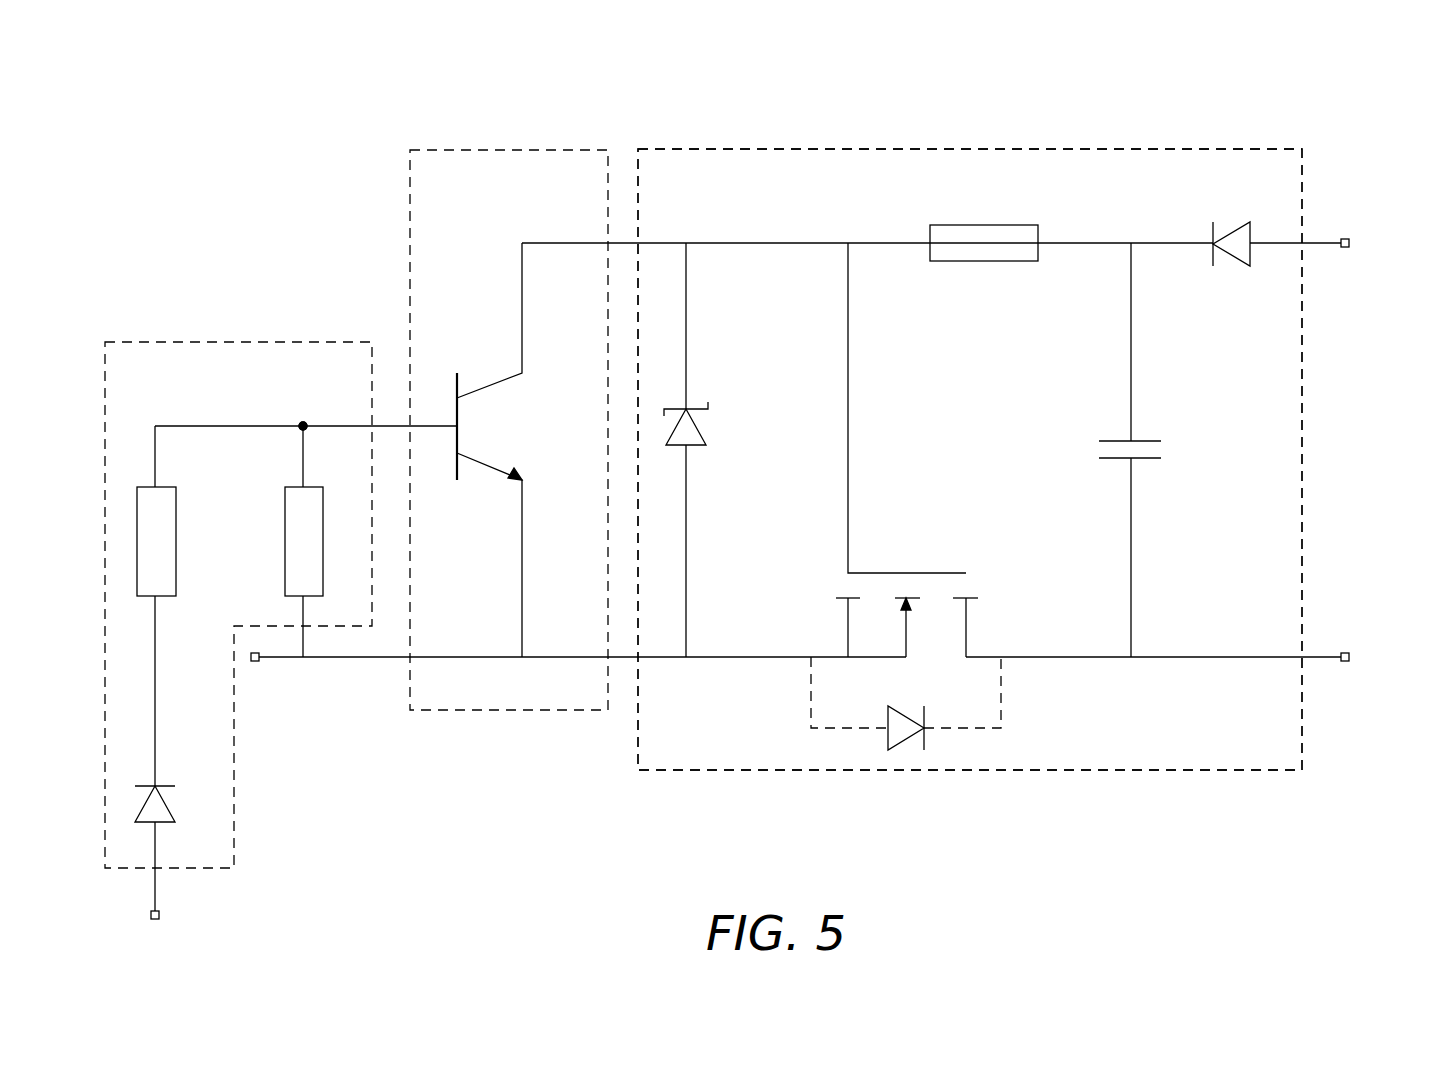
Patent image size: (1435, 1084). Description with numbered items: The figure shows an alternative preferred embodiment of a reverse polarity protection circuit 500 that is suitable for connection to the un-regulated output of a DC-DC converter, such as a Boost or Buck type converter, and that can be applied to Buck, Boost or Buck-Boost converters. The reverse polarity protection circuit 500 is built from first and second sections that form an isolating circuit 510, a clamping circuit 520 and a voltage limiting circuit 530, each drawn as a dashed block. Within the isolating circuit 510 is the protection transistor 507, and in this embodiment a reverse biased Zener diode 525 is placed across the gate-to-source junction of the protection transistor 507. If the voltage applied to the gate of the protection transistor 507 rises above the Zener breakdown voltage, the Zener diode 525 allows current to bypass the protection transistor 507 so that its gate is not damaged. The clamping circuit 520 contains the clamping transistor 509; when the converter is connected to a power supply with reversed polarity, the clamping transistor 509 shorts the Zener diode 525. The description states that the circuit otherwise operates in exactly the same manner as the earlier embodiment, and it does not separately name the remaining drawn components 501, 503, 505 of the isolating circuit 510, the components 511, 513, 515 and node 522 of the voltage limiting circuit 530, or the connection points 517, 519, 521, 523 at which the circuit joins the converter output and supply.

The reverse polarity protection circuit 500 is at (1166, 106).
The diode 501 is at (1232, 222).
The capacitor 503 is at (1163, 450).
The resistor 505 is at (980, 225).
The protection transistor 507 is at (933, 573).
The clamping transistor 509 is at (514, 428).
The isolating circuit 510 is at (668, 149).
The resistor 511 is at (285, 571).
The resistor 513 is at (176, 516).
The diode 515 is at (175, 808).
The terminal 517 is at (1353, 243).
The terminal 519 is at (1353, 657).
The clamping circuit 520 is at (441, 150).
The terminal 521 is at (163, 915).
The node 522 is at (303, 422).
The terminal 523 is at (251, 658).
The Zener diode 525 is at (708, 431).
The voltage limiting circuit 530 is at (144, 342).